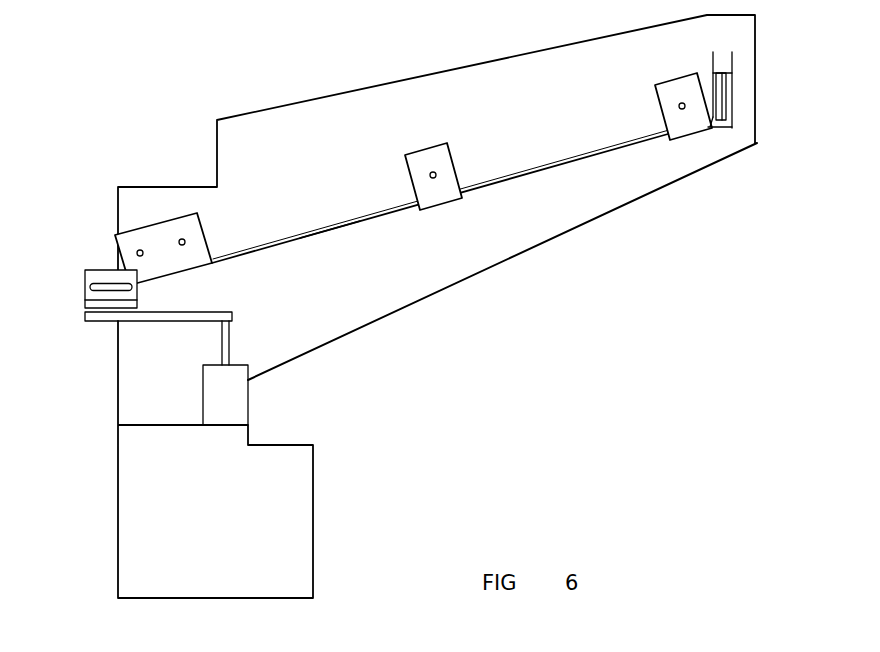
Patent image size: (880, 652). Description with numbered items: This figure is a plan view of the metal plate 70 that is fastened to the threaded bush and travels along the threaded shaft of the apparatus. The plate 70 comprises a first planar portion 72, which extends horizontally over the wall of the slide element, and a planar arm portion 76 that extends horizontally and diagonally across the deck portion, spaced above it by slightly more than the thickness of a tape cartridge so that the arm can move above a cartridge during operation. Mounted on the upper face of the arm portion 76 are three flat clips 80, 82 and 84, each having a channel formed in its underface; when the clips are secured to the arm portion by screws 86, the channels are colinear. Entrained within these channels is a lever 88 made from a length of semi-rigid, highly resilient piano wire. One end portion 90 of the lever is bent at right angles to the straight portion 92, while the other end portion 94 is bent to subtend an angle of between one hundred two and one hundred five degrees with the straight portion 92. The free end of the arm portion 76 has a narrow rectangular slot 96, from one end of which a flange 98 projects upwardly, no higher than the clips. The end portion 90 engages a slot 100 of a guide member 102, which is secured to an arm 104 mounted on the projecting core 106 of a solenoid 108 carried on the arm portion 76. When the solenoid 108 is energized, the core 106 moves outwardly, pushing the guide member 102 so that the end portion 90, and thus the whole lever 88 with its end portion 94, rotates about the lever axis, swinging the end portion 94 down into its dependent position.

The metal plate 70 is at (382, 324).
The first planar portion 72 is at (292, 535).
The planar arm portion 76 is at (567, 97).
The flat clip 80 is at (167, 230).
The flat clip 82 is at (427, 160).
The flat clip 84 is at (676, 96).
The screws 86 is at (187, 241).
The lever 88 is at (328, 218).
The end portion 90 is at (107, 280).
The straight portion 92 is at (547, 165).
The end portion 94 is at (722, 107).
The narrow rectangular slot 96 is at (725, 97).
The flange 98 is at (733, 62).
The slot 100 is at (90, 287).
The guide member 102 is at (97, 300).
The arm 104 is at (110, 322).
The projecting core 106 is at (228, 345).
The solenoid 108 is at (238, 407).